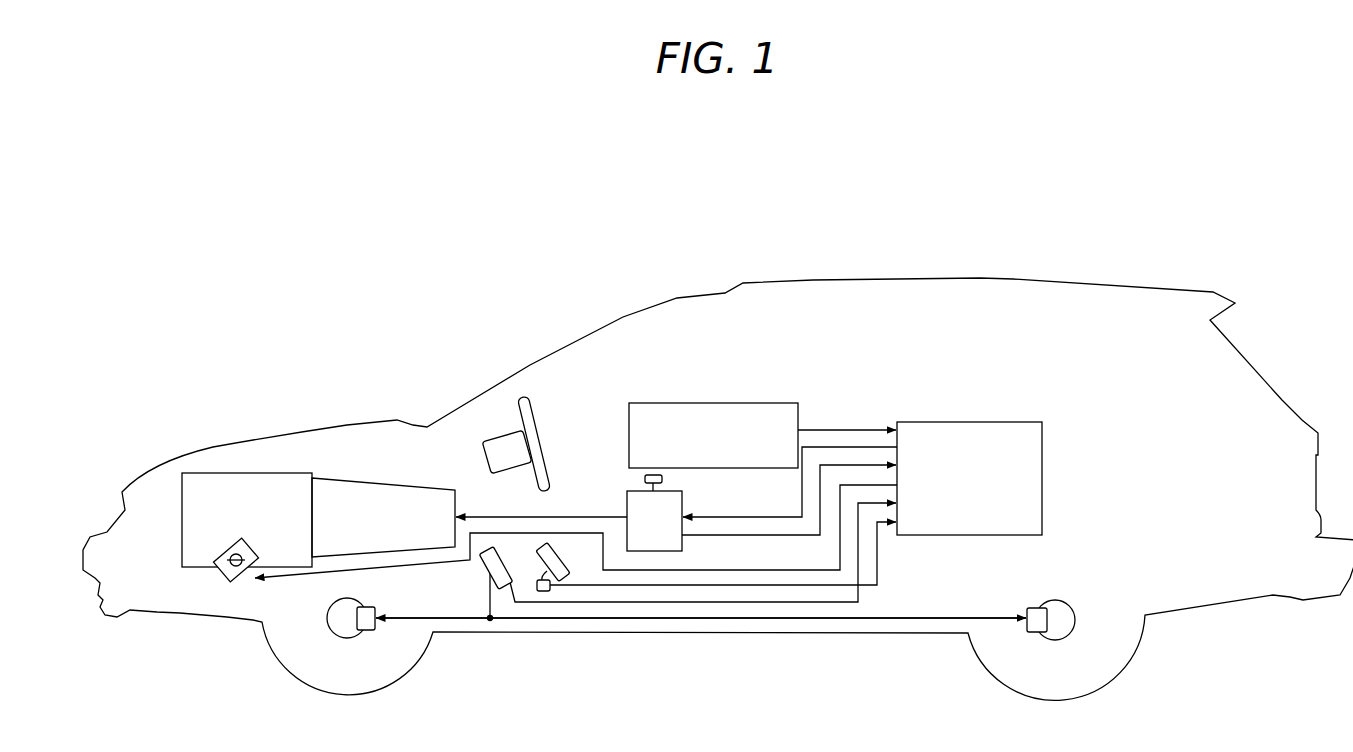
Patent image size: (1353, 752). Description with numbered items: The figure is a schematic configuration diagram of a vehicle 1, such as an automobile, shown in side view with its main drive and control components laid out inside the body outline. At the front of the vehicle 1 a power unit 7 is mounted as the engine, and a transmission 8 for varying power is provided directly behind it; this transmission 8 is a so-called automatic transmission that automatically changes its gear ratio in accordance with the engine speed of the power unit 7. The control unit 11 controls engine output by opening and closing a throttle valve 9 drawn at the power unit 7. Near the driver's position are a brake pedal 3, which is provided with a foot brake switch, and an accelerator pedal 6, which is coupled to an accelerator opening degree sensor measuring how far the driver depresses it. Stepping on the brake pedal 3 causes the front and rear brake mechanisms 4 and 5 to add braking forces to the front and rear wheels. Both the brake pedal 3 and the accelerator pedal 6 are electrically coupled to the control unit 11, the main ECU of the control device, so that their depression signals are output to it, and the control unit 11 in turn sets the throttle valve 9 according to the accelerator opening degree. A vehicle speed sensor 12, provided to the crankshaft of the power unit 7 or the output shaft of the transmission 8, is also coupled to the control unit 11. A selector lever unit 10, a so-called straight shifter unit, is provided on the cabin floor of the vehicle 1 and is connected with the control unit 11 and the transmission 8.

The vehicle 1 is at (835, 256).
The brake pedal 3 is at (480, 562).
The front brake mechanism 4 is at (378, 607).
The rear brake mechanism 5 is at (1037, 607).
The accelerator pedal 6 is at (546, 571).
The power unit 7 is at (284, 473).
The transmission 8 is at (383, 481).
The throttle valve 9 is at (222, 574).
The selector lever unit 10 is at (632, 478).
The control unit 11 is at (970, 422).
The vehicle speed sensor 12 is at (723, 403).